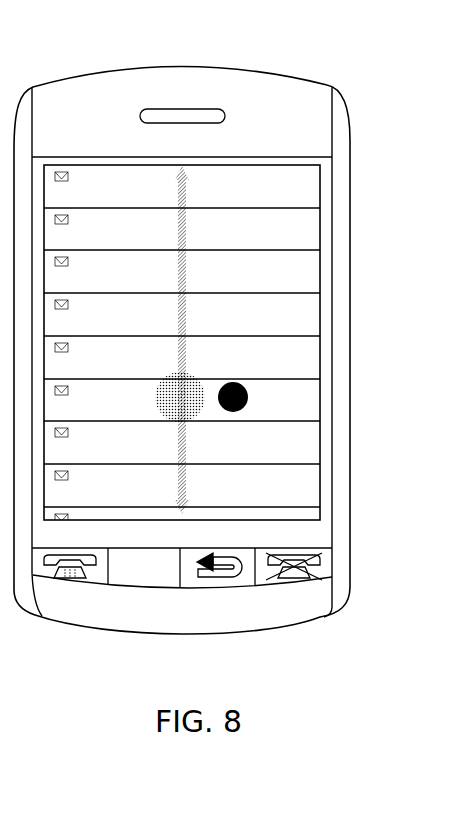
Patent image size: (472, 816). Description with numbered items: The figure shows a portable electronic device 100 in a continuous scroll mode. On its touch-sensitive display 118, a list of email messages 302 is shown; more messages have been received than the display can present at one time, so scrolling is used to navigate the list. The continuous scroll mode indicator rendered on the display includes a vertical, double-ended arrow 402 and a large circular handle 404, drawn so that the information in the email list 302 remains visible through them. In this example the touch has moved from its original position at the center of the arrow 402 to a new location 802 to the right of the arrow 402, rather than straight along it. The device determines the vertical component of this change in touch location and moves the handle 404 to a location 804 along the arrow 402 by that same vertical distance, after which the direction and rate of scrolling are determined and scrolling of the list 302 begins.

The portable electronic device 100 is at (329, 662).
The touch-sensitive display 118 is at (321, 187).
The list of email messages 302 is at (266, 160).
The double-ended arrow 402 is at (176, 486).
The handle 404 is at (196, 380).
The new location 802 is at (277, 377).
The location 804 is at (210, 377).